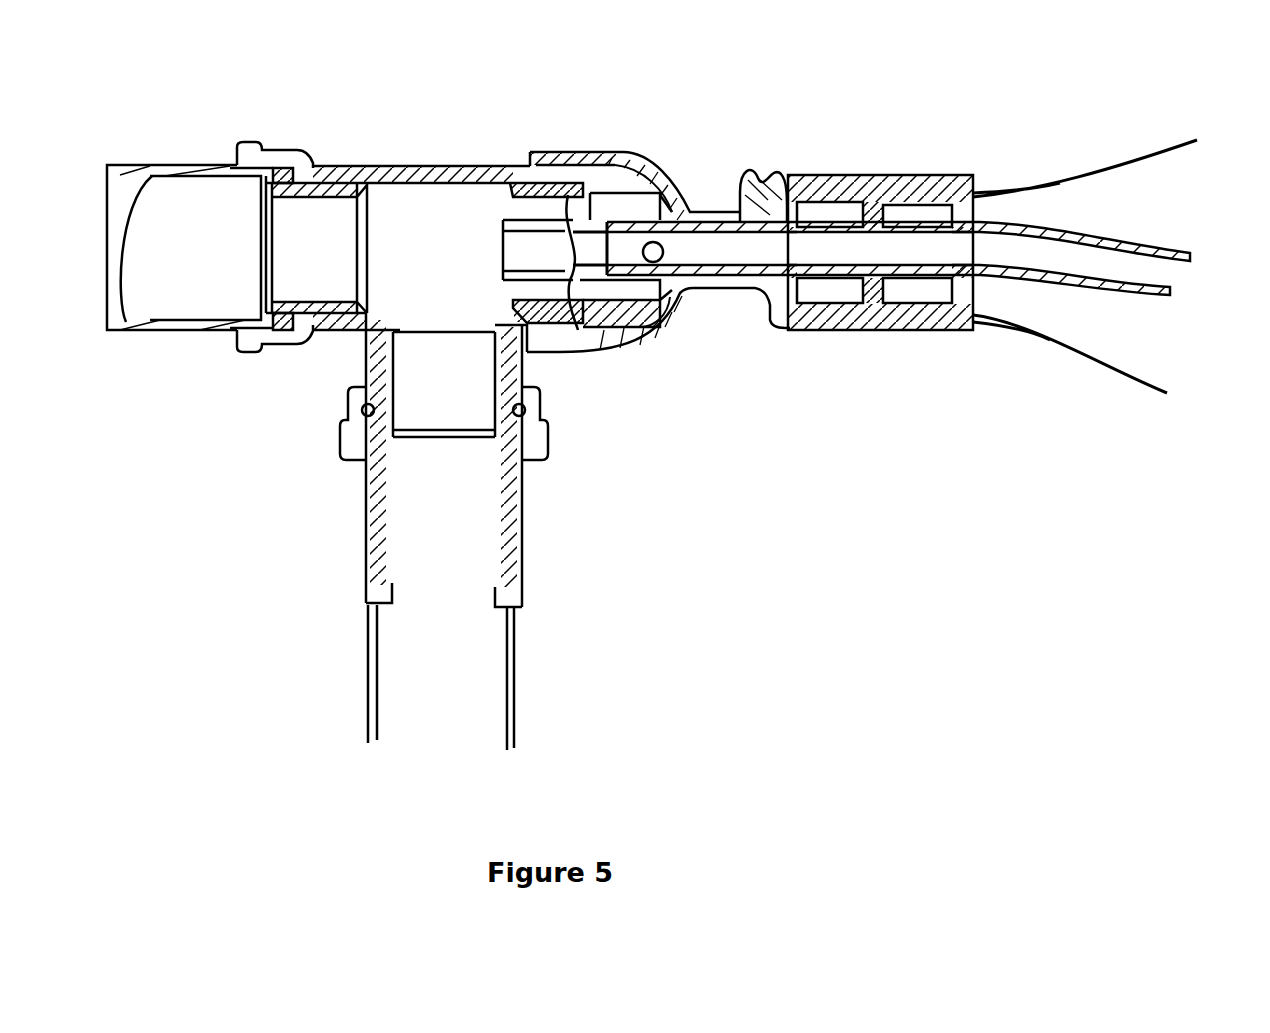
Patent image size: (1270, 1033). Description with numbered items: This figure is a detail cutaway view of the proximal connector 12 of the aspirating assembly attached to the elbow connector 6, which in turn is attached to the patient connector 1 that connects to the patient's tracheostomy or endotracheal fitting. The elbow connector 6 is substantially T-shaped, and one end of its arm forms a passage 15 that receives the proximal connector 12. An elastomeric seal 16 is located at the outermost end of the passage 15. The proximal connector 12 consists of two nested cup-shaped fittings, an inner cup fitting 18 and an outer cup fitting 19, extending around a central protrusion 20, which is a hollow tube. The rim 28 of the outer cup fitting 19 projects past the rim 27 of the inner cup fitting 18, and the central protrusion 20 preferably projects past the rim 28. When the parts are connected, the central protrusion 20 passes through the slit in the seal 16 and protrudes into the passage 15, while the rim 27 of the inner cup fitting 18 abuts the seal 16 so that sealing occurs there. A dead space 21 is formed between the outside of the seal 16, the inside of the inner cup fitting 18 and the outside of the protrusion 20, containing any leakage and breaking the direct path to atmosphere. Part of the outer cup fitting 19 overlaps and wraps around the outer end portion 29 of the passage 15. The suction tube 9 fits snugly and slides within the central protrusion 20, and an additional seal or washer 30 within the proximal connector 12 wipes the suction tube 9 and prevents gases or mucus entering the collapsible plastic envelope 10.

The patient connector 1 is at (178, 338).
The elbow connector 6 is at (360, 163).
The suction tube 9 is at (711, 242).
The plastic envelope 10 is at (1073, 178).
The proximal connector 12 is at (672, 160).
The passage 15 is at (520, 290).
The seal 16 is at (560, 258).
The inner cup fitting 18 is at (620, 152).
The outer cup fitting 19 is at (587, 148).
The central protrusion 20 is at (503, 222).
The dead space 21 is at (624, 300).
The rim of the inner cup fitting 27 is at (586, 315).
The rim of the outer cup fitting 28 is at (530, 152).
The outer end portion of the passage 29 is at (548, 158).
The seal or washer 30 is at (800, 180).